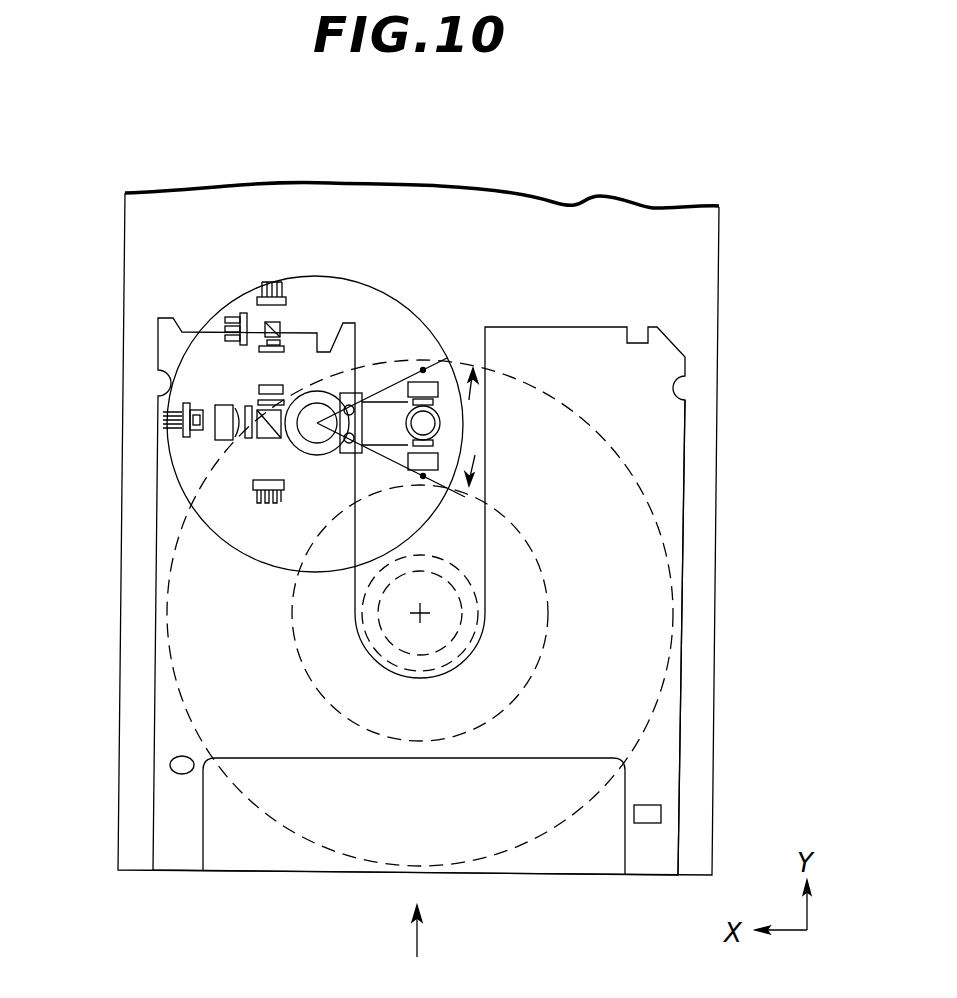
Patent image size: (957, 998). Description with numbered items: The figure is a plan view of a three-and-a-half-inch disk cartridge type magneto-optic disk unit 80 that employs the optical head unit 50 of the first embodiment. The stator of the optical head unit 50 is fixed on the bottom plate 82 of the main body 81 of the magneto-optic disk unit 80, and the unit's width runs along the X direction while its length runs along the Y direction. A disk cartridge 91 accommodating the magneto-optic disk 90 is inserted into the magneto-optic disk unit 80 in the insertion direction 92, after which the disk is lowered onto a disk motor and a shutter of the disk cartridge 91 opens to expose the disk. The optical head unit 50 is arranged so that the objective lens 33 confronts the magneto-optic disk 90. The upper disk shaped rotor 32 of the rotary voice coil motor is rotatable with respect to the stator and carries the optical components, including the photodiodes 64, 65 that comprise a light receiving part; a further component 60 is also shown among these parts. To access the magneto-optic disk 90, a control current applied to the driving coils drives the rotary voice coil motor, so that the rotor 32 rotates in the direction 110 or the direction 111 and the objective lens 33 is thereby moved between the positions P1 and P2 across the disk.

The magneto-optic disk unit 80 is at (690, 135).
The main body 81 is at (123, 307).
The bottom plate 82 is at (147, 250).
The magneto-optic disk 90 is at (640, 490).
The disk cartridge 91 is at (682, 552).
The insertion direction 92 is at (422, 940).
The optical head unit 50 is at (313, 276).
The rotor 32 is at (378, 293).
The objective lens 33 is at (426, 424).
The laser light source unit 60 is at (188, 447).
The photodiode 64 is at (240, 312).
The photodiode 65 is at (274, 280).
The rotation direction 110 is at (478, 464).
The rotation direction 111 is at (472, 398).
The position P1 is at (424, 478).
The position P2 is at (424, 370).